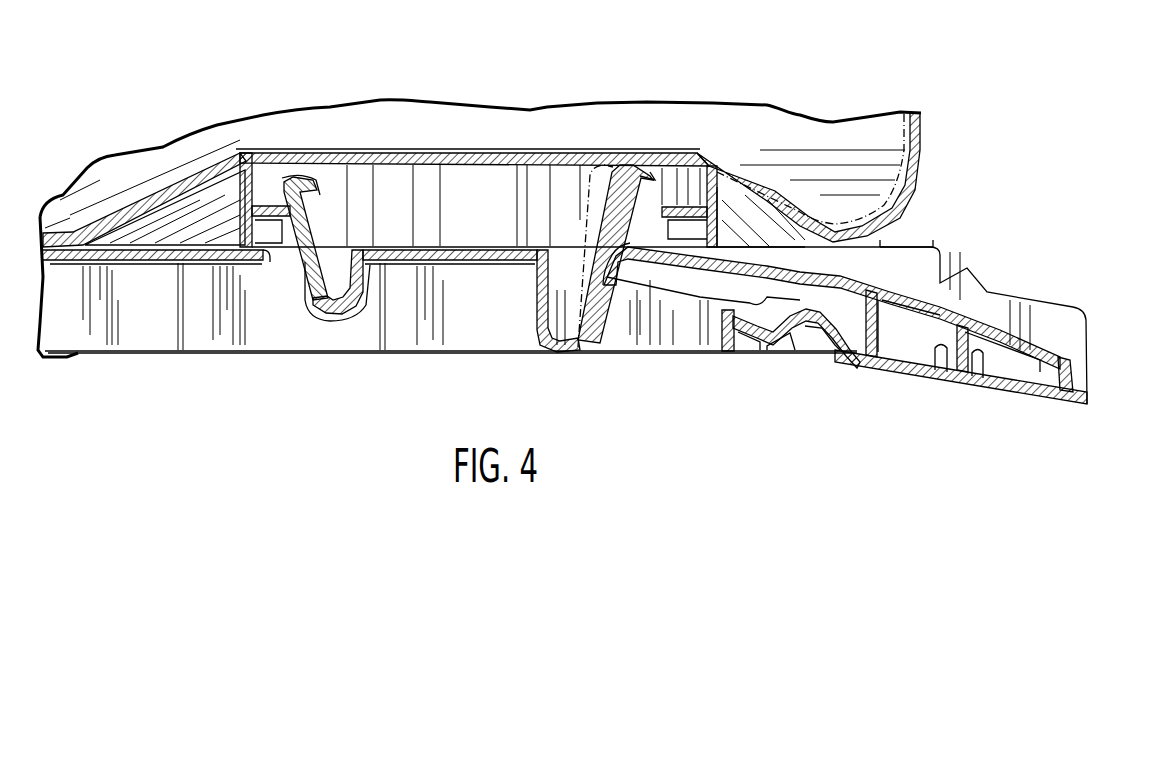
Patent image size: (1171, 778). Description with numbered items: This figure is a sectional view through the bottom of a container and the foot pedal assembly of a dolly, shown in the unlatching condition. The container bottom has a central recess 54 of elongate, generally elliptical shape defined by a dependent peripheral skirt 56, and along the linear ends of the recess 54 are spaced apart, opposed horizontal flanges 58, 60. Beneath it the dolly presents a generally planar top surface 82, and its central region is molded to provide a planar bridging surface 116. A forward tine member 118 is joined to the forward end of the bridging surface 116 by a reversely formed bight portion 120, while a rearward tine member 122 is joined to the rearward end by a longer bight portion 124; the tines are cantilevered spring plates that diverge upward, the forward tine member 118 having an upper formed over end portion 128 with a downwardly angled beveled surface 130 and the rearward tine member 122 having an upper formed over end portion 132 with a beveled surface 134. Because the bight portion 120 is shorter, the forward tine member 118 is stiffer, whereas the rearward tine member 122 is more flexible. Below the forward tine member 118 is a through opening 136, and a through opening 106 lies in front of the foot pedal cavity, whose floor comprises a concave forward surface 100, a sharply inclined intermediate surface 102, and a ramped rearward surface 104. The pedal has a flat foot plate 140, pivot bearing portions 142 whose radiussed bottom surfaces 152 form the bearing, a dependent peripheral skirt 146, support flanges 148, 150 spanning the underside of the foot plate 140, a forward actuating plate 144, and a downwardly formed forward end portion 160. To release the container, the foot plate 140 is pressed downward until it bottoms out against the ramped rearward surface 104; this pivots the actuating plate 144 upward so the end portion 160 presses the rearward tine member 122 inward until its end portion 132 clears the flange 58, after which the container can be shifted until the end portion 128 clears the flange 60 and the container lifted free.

The central recess 54 is at (452, 186).
The dependent peripheral skirt 56 is at (753, 187).
The horizontal flange 58 is at (673, 150).
The horizontal flange 60 is at (253, 150).
The top surface 82 is at (156, 172).
The concave forward surface 100 is at (778, 334).
The inclined intermediate surface 102 is at (843, 342).
The ramped rearward surface 104 is at (930, 382).
The through opening 106 is at (631, 336).
The bridging surface 116 is at (417, 265).
The forward tine member 118 is at (310, 288).
The bight portion 120 is at (338, 310).
The rearward tine member 122 is at (603, 297).
The bight portion 124 is at (553, 342).
The upper formed over end portion 128 is at (306, 185).
The upper beveled surface 130 is at (268, 180).
The upper formed over end portion 132 is at (626, 164).
The upper beveled surface 134 is at (648, 160).
The through opening 136 is at (276, 256).
The foot plate 140 is at (972, 330).
The pivot bearing portion 142 is at (738, 322).
The forward actuating plate 144 is at (704, 348).
The dependent peripheral skirt 146 is at (1075, 372).
The support flange 148 is at (970, 376).
The support flange 150 is at (877, 358).
The radiussed bottom surfaces 152 is at (760, 334).
The forward end portion 160 is at (635, 257).